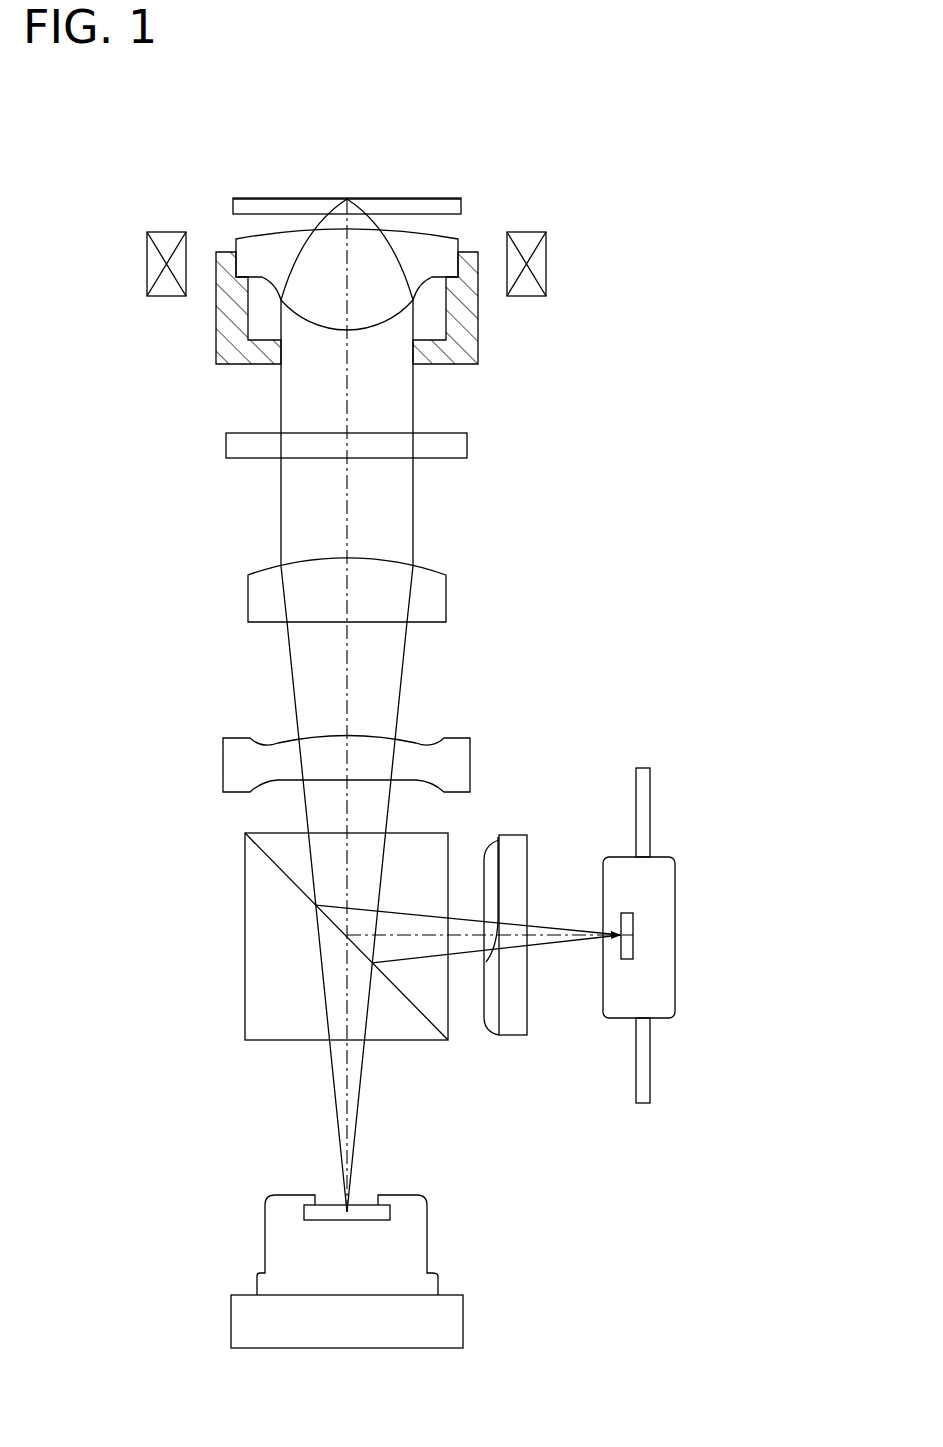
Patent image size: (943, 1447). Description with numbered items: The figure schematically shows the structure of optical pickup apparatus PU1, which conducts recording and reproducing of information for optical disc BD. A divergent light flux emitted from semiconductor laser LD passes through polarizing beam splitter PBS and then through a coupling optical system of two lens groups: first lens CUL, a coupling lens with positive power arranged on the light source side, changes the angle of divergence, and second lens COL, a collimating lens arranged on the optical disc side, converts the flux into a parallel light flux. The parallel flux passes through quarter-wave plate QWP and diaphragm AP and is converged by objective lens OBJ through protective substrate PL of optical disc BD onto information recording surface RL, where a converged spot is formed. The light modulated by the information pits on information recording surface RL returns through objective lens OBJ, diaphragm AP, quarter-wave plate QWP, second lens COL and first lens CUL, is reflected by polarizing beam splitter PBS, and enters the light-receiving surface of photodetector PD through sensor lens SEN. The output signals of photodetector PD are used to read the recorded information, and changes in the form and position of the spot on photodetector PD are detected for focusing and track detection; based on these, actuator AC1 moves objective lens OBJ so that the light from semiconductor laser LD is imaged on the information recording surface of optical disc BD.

The optical disc BD is at (407, 145).
The protective substrate PL is at (462, 200).
The information recording surface RL is at (463, 213).
The objective lens OBJ is at (459, 235).
The actuator AC1 is at (547, 265).
The diaphragm AP is at (286, 366).
The λ/4 wavelength plate QWP is at (467, 445).
The second lens COL is at (248, 597).
The optical pickup apparatus PU1 is at (632, 592).
The first lens CUL is at (223, 762).
The polarizing beam splitter PBS is at (245, 905).
The photodetector PD is at (658, 903).
The sensor lens SEN is at (510, 1036).
The semiconductor laser LD is at (463, 1316).